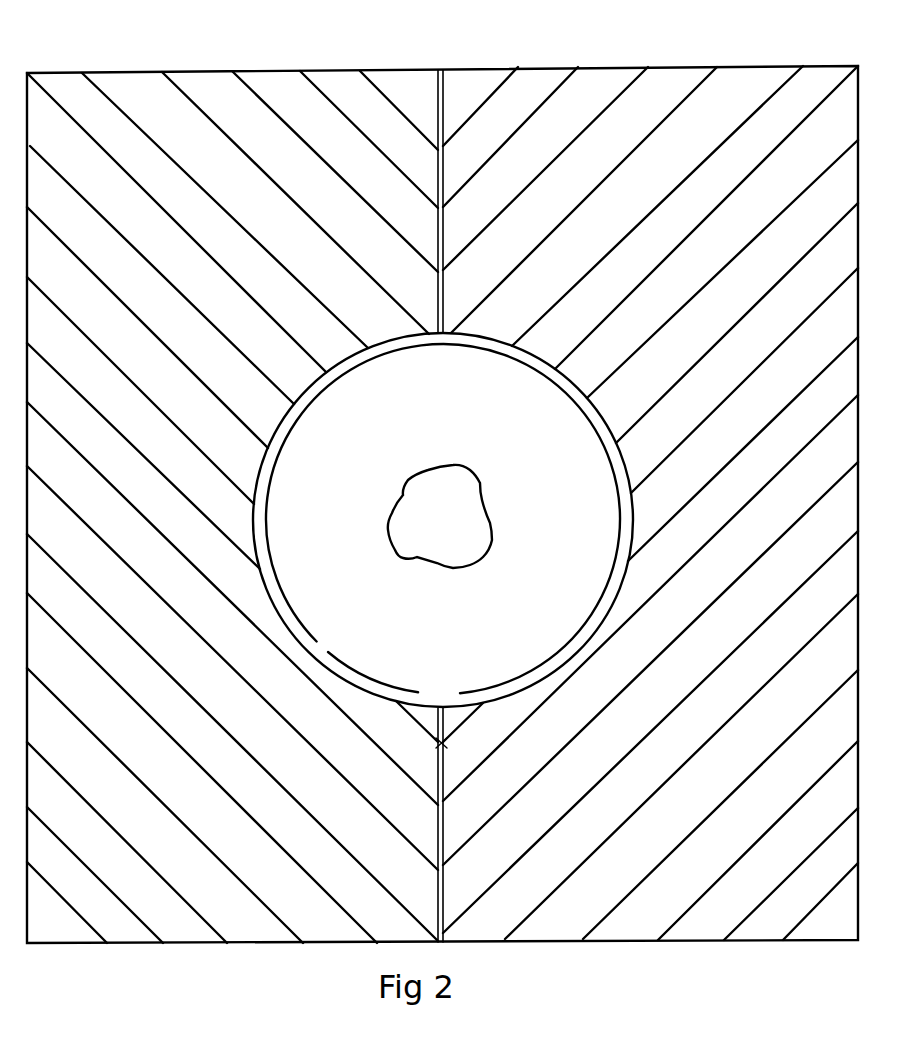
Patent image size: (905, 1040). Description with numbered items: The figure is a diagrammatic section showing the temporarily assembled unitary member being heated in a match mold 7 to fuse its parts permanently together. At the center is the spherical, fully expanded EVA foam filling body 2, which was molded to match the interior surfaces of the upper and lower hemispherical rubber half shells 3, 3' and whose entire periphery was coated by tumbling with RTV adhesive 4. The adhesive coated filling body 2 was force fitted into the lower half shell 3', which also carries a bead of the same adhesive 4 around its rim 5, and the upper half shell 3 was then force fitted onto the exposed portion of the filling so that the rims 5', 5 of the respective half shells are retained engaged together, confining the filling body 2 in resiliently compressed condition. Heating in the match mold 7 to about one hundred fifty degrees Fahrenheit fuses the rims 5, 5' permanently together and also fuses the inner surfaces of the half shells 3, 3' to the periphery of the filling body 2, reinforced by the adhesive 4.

The match mold 7 is at (583, 60).
The upper half shell 3 is at (443, 519).
The lower half shell 3' is at (443, 528).
The RTV adhesive 4 is at (550, 499).
The filling body 2 is at (456, 535).
The rim 5 is at (411, 542).
The rim 5' is at (488, 480).